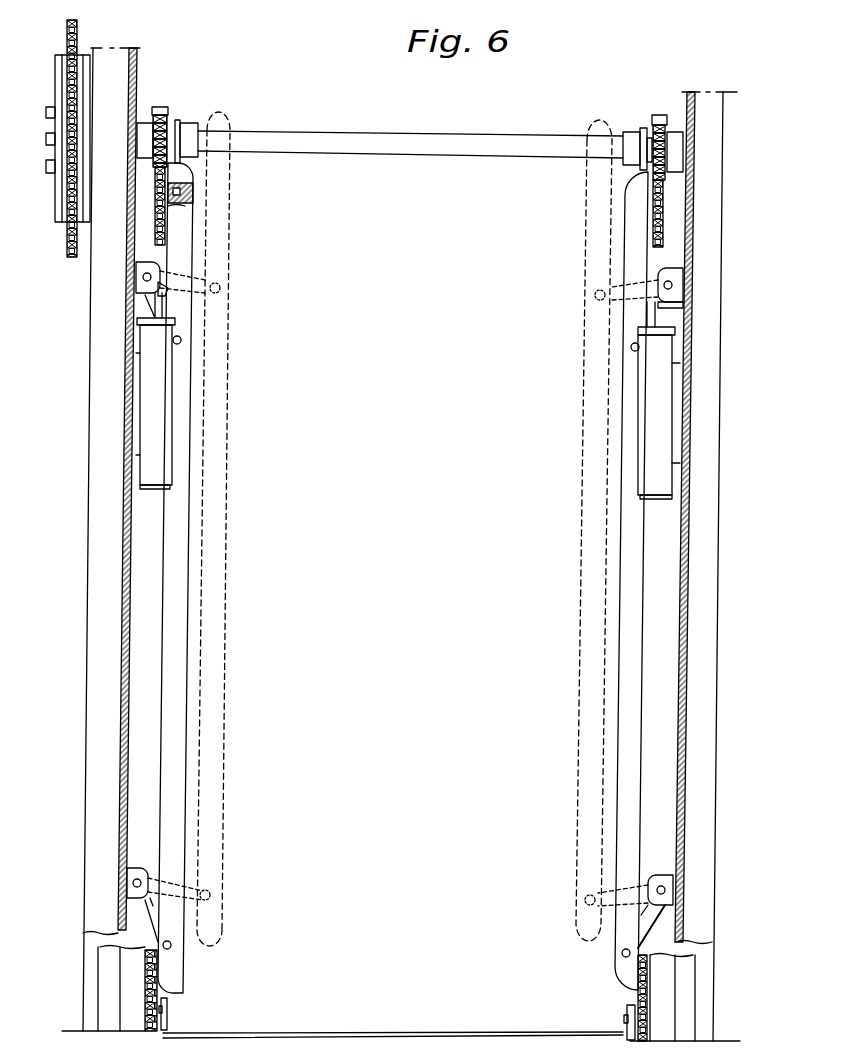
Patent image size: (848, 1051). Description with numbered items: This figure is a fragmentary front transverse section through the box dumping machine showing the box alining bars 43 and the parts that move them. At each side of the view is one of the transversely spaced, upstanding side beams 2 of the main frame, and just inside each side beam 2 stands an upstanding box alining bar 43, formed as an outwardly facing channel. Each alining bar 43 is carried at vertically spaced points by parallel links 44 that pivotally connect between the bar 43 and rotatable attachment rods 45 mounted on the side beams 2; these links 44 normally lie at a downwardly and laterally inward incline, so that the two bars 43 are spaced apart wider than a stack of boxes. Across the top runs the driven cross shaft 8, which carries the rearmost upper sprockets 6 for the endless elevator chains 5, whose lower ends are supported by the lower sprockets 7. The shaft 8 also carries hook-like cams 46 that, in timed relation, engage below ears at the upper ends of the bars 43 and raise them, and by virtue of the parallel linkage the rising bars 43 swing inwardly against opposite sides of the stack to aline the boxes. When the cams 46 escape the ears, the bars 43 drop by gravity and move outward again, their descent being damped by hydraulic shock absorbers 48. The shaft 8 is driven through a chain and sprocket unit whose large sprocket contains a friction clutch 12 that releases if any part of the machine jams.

The side beams 2 is at (113, 615).
The elevator chains 5 is at (145, 972).
The upper sprockets 6 is at (162, 108).
The lower sprockets 7 is at (163, 998).
The driven cross shaft 8 is at (390, 145).
The friction clutch 12 is at (60, 214).
The box alining bars 43 is at (178, 525).
The parallel links 44 is at (165, 302).
The rotatable attachment rods 45 is at (145, 277).
The hook-like cams 46 is at (178, 120).
The hydraulic shock absorbers 48 is at (160, 412).